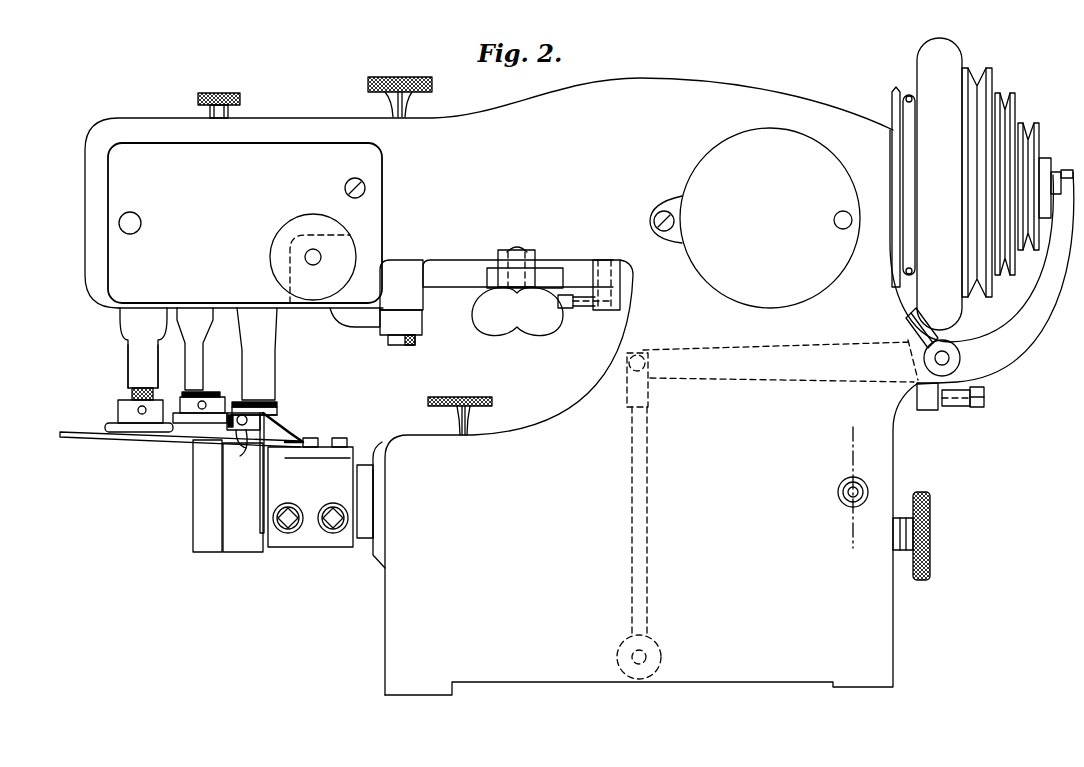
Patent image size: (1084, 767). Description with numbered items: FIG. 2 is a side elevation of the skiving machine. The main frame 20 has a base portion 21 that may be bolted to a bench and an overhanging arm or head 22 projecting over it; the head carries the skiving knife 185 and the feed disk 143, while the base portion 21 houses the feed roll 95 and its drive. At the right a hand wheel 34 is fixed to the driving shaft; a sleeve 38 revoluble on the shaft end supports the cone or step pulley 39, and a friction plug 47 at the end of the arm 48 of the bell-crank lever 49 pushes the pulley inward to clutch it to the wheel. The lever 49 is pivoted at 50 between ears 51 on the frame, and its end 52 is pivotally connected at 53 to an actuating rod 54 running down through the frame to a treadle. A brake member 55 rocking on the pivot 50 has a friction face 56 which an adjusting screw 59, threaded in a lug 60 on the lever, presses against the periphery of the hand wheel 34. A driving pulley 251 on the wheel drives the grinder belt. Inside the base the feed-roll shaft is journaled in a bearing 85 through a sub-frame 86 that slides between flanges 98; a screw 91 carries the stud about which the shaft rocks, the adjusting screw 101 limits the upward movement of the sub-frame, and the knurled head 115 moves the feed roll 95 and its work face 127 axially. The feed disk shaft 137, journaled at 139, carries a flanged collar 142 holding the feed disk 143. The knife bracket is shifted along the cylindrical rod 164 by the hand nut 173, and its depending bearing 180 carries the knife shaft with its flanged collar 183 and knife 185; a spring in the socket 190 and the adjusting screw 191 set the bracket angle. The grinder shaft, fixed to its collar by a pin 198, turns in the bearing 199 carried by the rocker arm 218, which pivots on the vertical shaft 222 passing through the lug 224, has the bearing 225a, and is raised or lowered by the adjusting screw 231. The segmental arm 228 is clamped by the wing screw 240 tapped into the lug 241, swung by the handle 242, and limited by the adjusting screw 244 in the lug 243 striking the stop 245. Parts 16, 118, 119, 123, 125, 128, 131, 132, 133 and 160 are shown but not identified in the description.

The section line 16 is at (852, 487).
The main frame 20 is at (755, 95).
The base portion 21 is at (395, 640).
The overhanging arm or head 22 is at (88, 196).
The hand wheel 34 is at (930, 48).
The sleeve 38 is at (1044, 160).
The cone or step pulley 39 is at (990, 80).
The friction plug 47 is at (1058, 172).
The arm of bell-crank lever 48 is at (1046, 328).
The bell-crank lever 49 is at (1010, 357).
The pivot 50 is at (949, 358).
The ears 51 is at (900, 390).
The end of lever 52 is at (816, 346).
The pivotal connection 53 is at (641, 354).
The actuating rod 54 is at (650, 576).
The brake member 55 is at (914, 328).
The friction face 56 is at (906, 316).
The adjusting screw 59 is at (985, 394).
The lug 60 is at (963, 406).
The bearing 85 is at (267, 538).
The sub-frame 86 is at (364, 476).
The screw 91 is at (868, 489).
The feed roll 95 is at (240, 459).
The flanges 98 is at (374, 495).
The adjusting screw 101 is at (470, 421).
The knurled hand wheel or head 115 is at (930, 539).
The bracket block 118 is at (288, 528).
The bolts 119 is at (313, 526).
The nut 123 is at (346, 437).
The wire guide 125 is at (290, 429).
The work face 127 is at (242, 548).
The foot plate 128 is at (282, 414).
The screw 131 is at (256, 430).
The spring arm 132 is at (236, 450).
The bracket 133 is at (232, 438).
The feed disk shaft 137 is at (130, 395).
The journal 139 is at (133, 370).
The flanged collar 142 is at (122, 411).
The feed disk 143 is at (65, 437).
The plate 160 is at (225, 556).
The cylindrical rod 164 is at (313, 257).
The hand operated nut 173 is at (272, 226).
The bearing 180 is at (276, 324).
The flanged collar 183 is at (272, 406).
The skiving knife 185 is at (313, 437).
The socket 190 is at (120, 316).
The adjusting screw 191 is at (210, 111).
The pin 198 is at (226, 400).
The bearing 199 is at (195, 346).
The rocker arm 218 is at (346, 326).
The vertical shaft 222 is at (400, 346).
The lug 224 is at (418, 300).
The bearing 225a is at (418, 325).
The segmental arm 228 is at (458, 276).
The adjusting screw 231 is at (390, 101).
The wing clamp screw 240 is at (503, 326).
The lug 241 is at (528, 253).
The handle 242 is at (546, 276).
The lug 243 is at (586, 310).
The adjusting screw 244 is at (566, 310).
The stop lug 245 is at (622, 283).
The driving pulley 251 is at (892, 91).